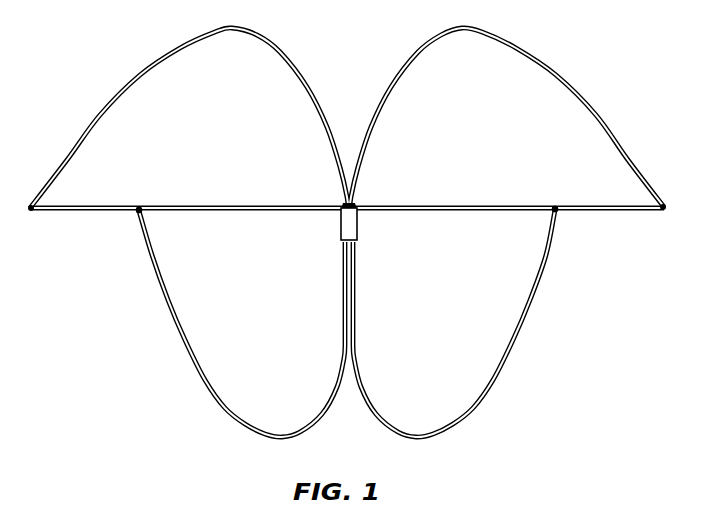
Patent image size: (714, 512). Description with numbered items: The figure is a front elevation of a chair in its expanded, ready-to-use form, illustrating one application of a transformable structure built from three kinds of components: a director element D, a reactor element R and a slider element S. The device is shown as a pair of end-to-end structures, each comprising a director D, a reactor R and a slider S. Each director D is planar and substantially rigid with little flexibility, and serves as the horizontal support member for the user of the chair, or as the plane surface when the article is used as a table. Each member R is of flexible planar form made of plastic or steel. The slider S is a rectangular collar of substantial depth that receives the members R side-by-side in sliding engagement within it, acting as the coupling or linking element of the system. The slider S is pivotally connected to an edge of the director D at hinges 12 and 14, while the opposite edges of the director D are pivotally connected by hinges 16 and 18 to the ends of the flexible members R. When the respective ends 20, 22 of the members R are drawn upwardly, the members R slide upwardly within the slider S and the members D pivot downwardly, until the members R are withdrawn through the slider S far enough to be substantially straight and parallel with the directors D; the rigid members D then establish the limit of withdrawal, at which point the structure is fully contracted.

The hinge 12 is at (351, 207).
The hinge 14 is at (348, 207).
The hinge 16 is at (557, 209).
The hinge 18 is at (140, 207).
The end of member R 20 is at (348, 207).
The end of member R 22 is at (351, 207).
The slider element S is at (357, 233).
The director element D is at (218, 203).
The reactor element R is at (203, 382).